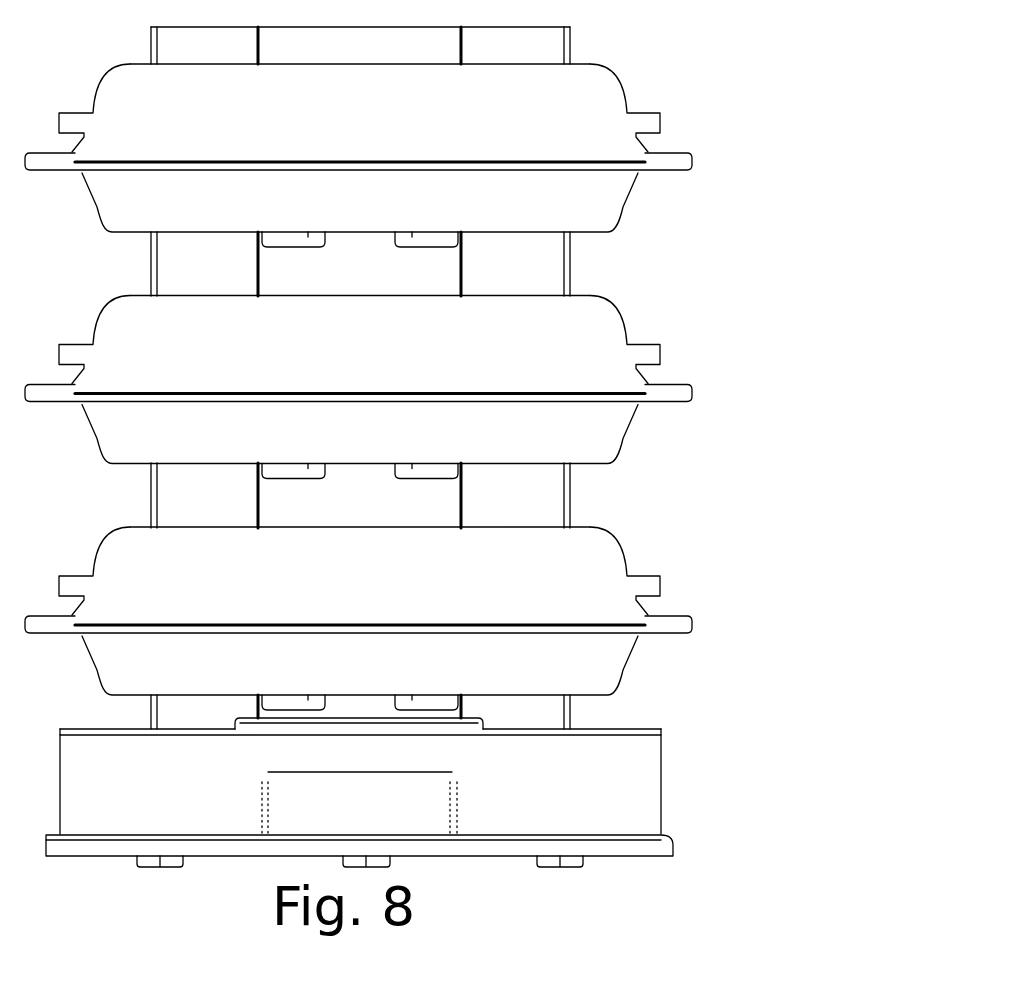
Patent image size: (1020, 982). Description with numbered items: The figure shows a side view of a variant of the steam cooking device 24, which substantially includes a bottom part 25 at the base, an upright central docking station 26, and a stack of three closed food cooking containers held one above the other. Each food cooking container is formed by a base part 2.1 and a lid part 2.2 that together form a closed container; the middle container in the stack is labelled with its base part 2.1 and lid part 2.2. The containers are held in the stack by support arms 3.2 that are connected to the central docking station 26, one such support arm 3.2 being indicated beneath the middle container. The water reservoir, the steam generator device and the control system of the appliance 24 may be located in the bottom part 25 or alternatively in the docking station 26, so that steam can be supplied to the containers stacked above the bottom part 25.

The cooking device 24 is at (788, 337).
The docking station 26 is at (549, 269).
The lid part 2.2 is at (358, 349).
The base part 2.1 is at (360, 434).
The support arm 3.2 is at (433, 478).
The bottom part 25 is at (643, 779).